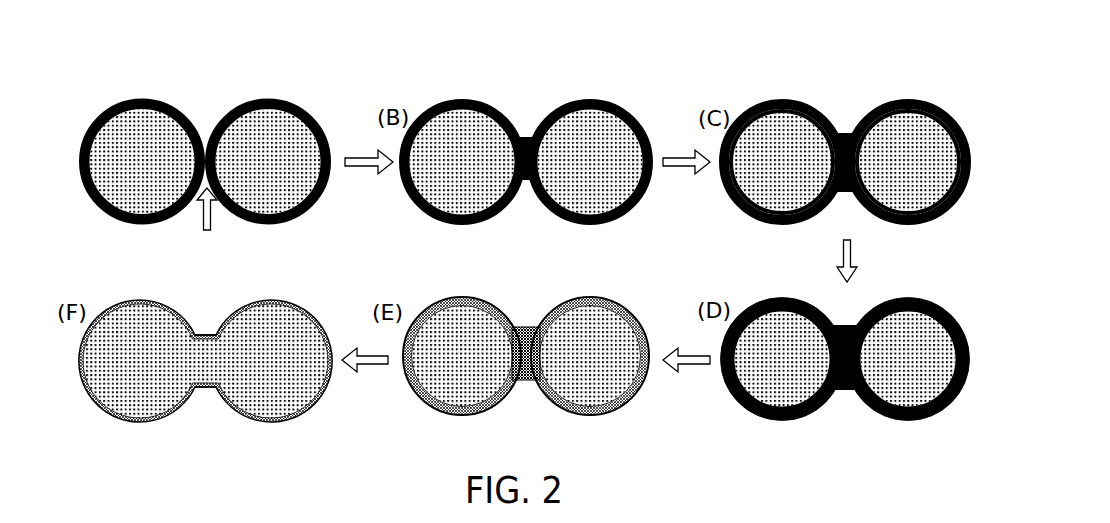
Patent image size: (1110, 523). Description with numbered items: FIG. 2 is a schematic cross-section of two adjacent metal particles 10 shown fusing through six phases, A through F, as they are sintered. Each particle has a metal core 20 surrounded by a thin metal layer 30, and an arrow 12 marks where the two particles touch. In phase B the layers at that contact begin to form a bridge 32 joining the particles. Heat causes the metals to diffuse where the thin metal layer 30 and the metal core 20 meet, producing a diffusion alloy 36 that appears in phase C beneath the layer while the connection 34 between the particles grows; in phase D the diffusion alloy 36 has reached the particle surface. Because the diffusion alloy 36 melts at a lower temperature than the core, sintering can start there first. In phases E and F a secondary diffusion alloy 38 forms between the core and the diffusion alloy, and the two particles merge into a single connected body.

The bonded assembly 10 is at (166, 35).
The pressing direction 12 is at (202, 220).
The metal core 20 is at (283, 130).
The thin metal layer 30 is at (165, 99).
The bridges 32 is at (527, 137).
The joint portion 34 is at (847, 133).
The diffusion alloy 36 is at (906, 212).
The secondary diffusion alloy 38 is at (506, 312).